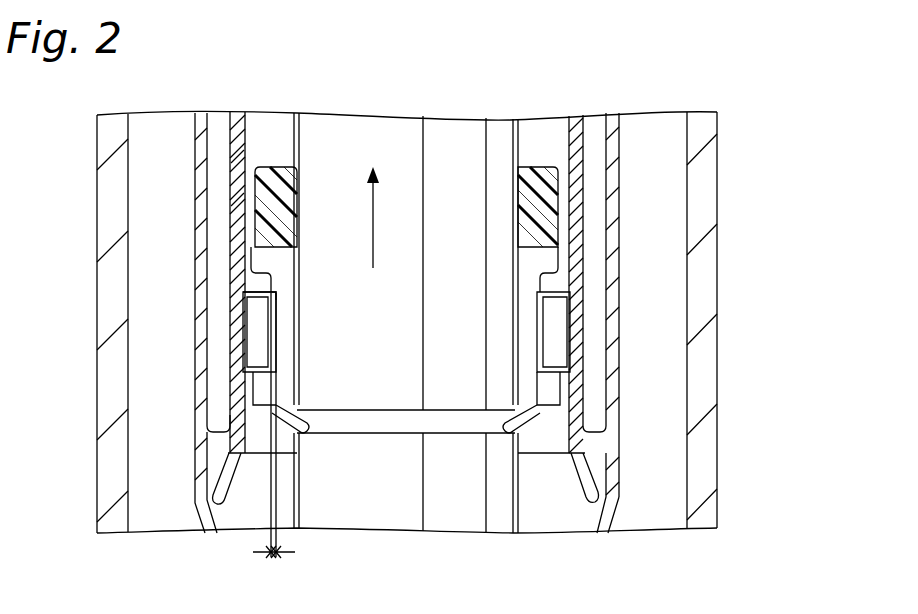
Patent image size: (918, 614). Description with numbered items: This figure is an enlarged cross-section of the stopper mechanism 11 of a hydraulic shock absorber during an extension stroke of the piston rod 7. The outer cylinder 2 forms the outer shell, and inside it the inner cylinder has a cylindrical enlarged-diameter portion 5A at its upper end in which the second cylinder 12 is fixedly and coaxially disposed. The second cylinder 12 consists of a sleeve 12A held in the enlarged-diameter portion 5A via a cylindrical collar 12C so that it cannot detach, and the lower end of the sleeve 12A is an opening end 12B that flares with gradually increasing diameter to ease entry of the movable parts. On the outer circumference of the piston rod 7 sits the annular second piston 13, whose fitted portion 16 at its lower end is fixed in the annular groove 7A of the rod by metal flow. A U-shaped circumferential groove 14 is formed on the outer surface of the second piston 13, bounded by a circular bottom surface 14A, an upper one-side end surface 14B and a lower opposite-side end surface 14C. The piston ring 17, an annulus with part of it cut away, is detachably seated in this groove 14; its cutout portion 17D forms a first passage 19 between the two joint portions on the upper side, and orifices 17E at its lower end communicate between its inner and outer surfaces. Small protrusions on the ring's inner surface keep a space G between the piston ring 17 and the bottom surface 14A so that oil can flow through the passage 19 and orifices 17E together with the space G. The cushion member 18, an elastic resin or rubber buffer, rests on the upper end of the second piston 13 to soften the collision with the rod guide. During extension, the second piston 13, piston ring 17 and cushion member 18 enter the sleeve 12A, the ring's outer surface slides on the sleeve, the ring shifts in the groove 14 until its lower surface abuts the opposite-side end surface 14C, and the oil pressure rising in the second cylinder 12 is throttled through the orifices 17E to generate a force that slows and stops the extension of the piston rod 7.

The outer cylinder 2 is at (718, 122).
The enlarged-diameter portion 5A is at (203, 462).
The piston rod 7 is at (389, 128).
The annular groove 7A is at (402, 420).
The stopper mechanism 11 is at (630, 207).
The second cylinder 12 is at (583, 237).
The sleeve 12A is at (238, 197).
The opening end 12B is at (603, 493).
The collar 12C is at (237, 152).
The second piston 13 is at (268, 254).
The circumferential groove 14 is at (257, 277).
The bottom surface 14A is at (541, 312).
The one-side end surface 14B is at (548, 283).
The opposite-side end surface 14C is at (545, 355).
The fitted portion 16 is at (530, 423).
The piston ring 17 is at (245, 345).
The cutout portion 17D is at (250, 313).
The orifice 17E is at (538, 383).
The cushion member 18 is at (535, 205).
The first passage 19 is at (246, 290).
The space G is at (274, 440).